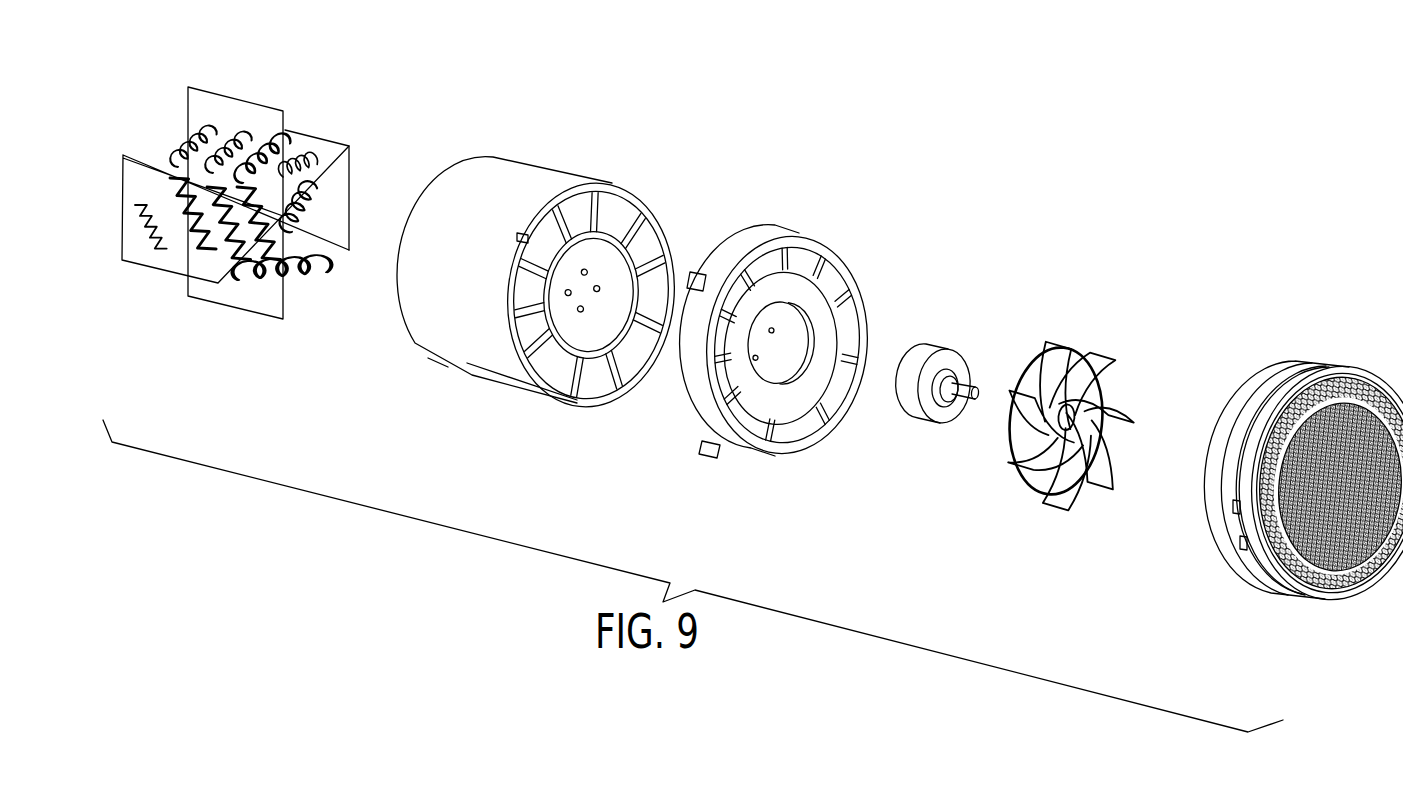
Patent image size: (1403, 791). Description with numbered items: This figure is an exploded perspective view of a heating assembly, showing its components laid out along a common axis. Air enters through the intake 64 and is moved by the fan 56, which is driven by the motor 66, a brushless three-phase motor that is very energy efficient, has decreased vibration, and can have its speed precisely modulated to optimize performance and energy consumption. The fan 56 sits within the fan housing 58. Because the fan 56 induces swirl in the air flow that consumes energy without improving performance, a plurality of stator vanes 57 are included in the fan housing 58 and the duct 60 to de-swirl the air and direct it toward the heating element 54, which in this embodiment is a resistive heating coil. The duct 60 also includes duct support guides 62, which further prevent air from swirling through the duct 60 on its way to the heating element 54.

The heating element 54 is at (180, 165).
The duct support guides 62 is at (237, 110).
The duct 60 is at (507, 172).
The stator vanes 57 is at (630, 207).
The fan housing 58 is at (790, 237).
The motor 66 is at (923, 352).
The fan 56 is at (1083, 340).
The intake 64 is at (1320, 368).